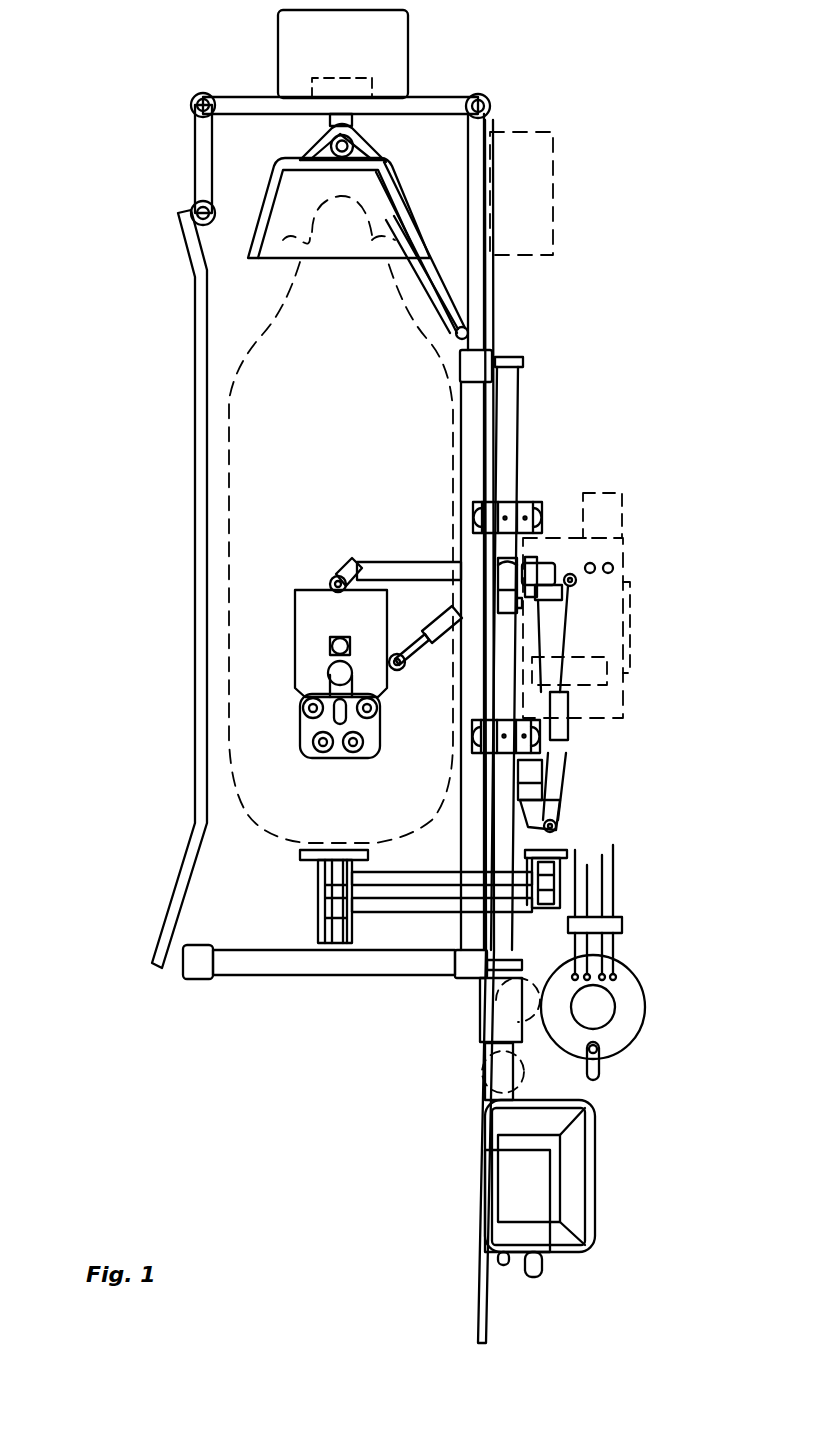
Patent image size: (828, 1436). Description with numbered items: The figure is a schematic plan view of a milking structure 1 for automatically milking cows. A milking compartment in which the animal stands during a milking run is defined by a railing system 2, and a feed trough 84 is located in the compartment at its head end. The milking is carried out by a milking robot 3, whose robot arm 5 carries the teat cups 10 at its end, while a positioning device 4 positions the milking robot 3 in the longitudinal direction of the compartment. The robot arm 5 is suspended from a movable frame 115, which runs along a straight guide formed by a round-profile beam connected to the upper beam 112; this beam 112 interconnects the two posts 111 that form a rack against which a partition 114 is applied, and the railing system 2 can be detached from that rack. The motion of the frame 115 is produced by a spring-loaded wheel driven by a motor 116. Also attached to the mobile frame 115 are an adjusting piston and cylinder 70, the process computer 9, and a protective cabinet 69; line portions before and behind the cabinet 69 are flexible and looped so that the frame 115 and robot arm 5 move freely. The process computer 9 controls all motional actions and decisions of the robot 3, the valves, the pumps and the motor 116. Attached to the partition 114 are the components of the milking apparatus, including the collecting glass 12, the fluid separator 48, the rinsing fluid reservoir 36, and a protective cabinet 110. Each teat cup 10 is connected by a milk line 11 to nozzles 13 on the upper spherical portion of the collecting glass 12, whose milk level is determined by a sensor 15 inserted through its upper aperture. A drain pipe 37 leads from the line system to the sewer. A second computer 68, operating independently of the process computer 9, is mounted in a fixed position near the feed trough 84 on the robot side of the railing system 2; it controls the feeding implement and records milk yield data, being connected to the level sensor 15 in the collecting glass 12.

The milking structure 1 is at (626, 372).
The railing system 2 is at (233, 110).
The milking robot 3 is at (570, 768).
The positioning device 4 is at (575, 848).
The robot arm 5 is at (380, 562).
The process computer 9 is at (523, 552).
The teat cups 10 is at (303, 717).
The milk line 11 is at (603, 900).
The collecting glass 12 is at (643, 1012).
The nozzles 13 is at (617, 977).
The milk level sensor 15 is at (607, 1022).
The reservoir 36 is at (593, 1187).
The drain pipe 37 is at (540, 1276).
The fluid separator 48 is at (533, 978).
The second computer 68 is at (553, 180).
The protective cabinet 69 is at (608, 485).
The adjusting piston and cylinder 70 is at (540, 782).
The feed trough 84 is at (270, 253).
The protective cabinet 110 is at (497, 1203).
The posts 111 is at (473, 340).
The upper beam 112 is at (467, 425).
The partition 114 is at (477, 1075).
The frame 115 is at (495, 688).
The motor 116 is at (487, 573).